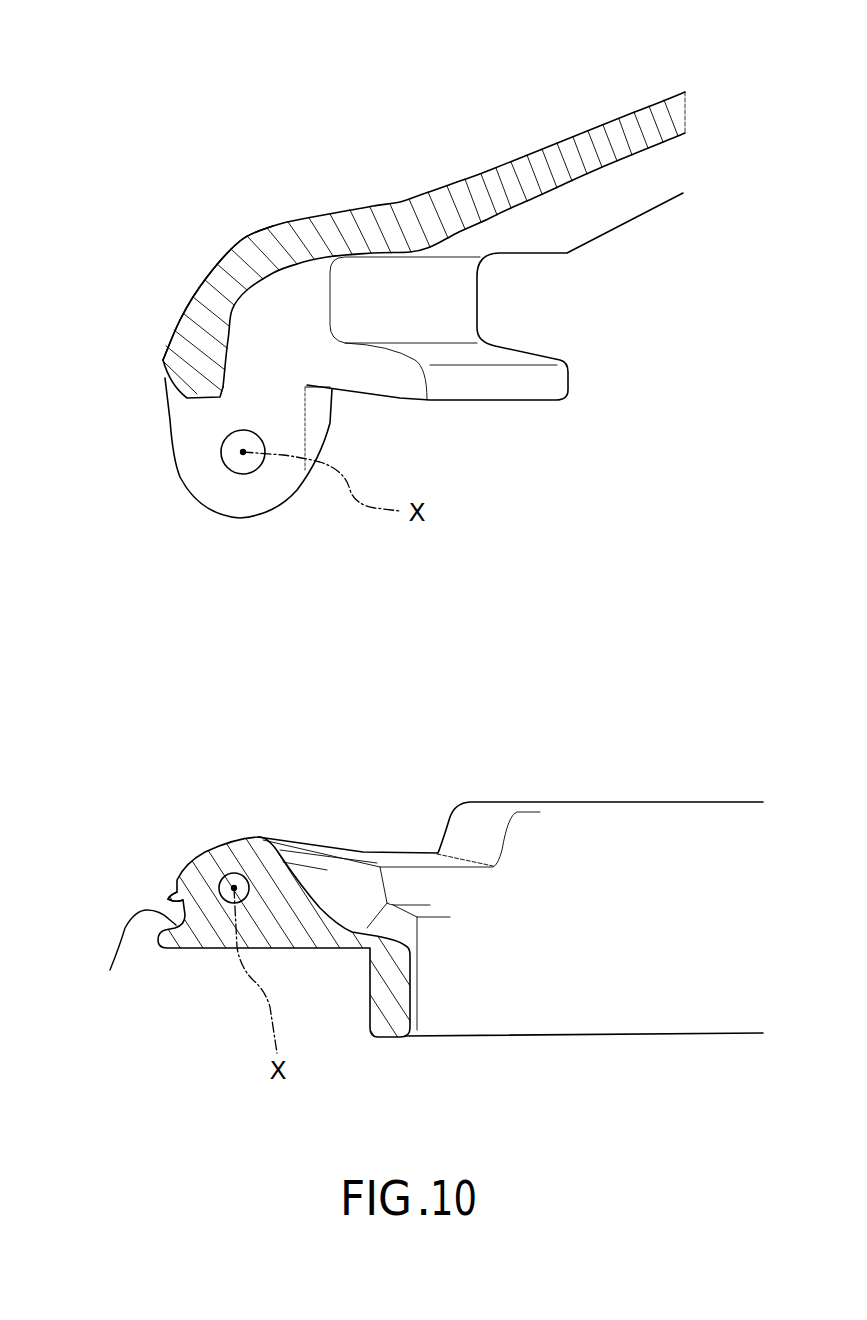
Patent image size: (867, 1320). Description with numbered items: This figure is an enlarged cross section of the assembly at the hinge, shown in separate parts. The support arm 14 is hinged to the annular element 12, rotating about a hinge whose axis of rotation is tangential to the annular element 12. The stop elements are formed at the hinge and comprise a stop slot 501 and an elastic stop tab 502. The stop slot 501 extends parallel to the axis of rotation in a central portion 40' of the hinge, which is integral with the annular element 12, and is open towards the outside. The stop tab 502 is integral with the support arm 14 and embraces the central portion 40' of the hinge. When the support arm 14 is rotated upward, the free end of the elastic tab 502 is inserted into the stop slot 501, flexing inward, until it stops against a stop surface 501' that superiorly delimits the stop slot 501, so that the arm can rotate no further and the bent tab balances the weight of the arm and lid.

The support arm 14 is at (403, 200).
The elastic stop tab 502 is at (208, 277).
The annular element 12 is at (597, 802).
The central portion of the hinge 40' is at (284, 862).
The stop surface 501' is at (109, 866).
The stop slot 501 is at (102, 957).